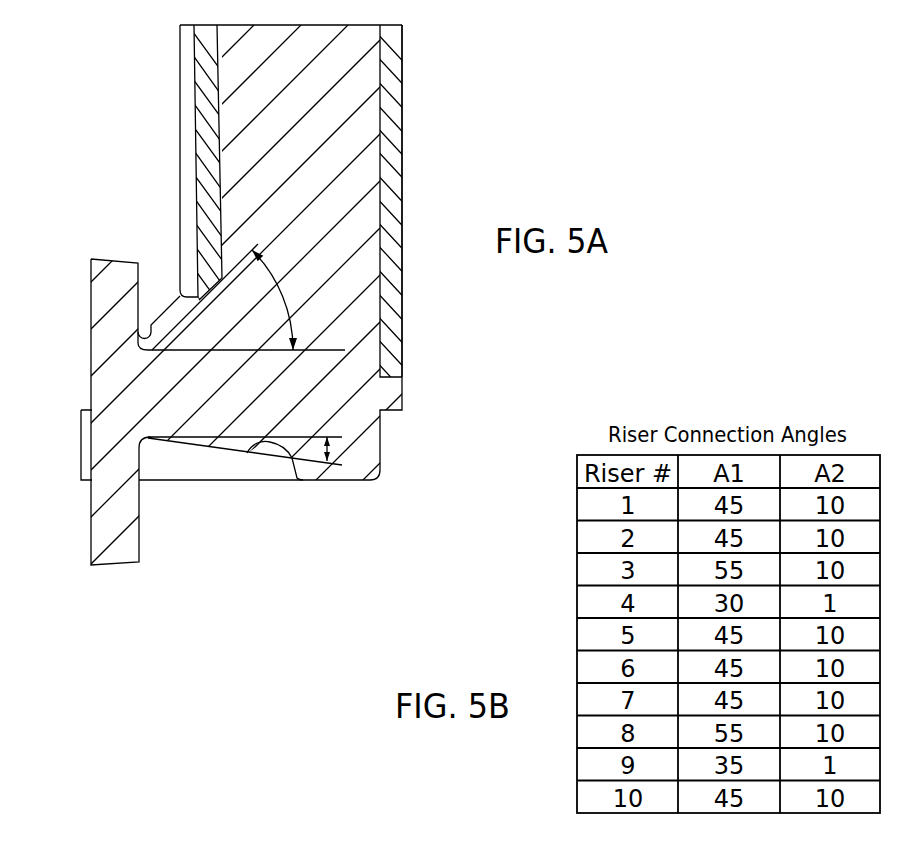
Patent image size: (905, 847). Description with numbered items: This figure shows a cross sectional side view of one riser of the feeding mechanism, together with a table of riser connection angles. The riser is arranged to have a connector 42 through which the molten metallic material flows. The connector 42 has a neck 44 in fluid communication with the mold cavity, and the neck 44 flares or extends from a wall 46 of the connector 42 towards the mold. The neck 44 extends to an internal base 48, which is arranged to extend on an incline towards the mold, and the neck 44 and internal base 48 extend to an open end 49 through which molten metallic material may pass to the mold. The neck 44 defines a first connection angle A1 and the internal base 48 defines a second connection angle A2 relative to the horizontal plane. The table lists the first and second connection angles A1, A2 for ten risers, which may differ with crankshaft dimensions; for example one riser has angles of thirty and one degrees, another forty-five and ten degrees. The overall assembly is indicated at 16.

The riser connection 16 is at (104, 51).
The connector 42 is at (180, 100).
The neck 44 is at (180, 158).
The wall 46 is at (170, 303).
The internal base 48 is at (249, 450).
The open end 49 is at (140, 348).
The first connection angle A1 is at (274, 277).
The second connection angle A2 is at (334, 446).